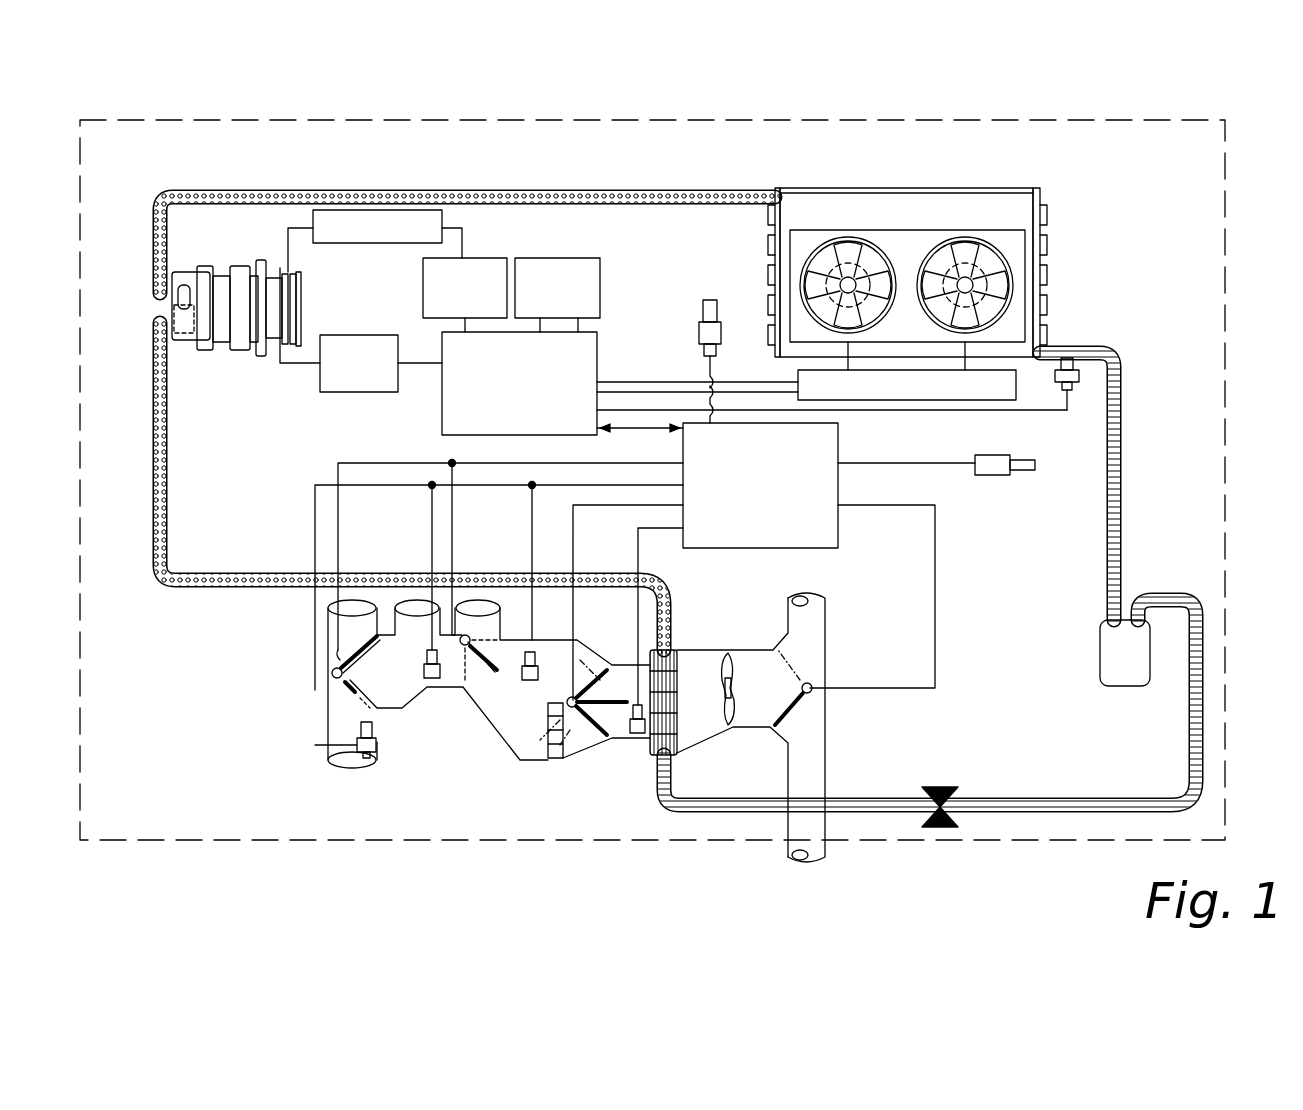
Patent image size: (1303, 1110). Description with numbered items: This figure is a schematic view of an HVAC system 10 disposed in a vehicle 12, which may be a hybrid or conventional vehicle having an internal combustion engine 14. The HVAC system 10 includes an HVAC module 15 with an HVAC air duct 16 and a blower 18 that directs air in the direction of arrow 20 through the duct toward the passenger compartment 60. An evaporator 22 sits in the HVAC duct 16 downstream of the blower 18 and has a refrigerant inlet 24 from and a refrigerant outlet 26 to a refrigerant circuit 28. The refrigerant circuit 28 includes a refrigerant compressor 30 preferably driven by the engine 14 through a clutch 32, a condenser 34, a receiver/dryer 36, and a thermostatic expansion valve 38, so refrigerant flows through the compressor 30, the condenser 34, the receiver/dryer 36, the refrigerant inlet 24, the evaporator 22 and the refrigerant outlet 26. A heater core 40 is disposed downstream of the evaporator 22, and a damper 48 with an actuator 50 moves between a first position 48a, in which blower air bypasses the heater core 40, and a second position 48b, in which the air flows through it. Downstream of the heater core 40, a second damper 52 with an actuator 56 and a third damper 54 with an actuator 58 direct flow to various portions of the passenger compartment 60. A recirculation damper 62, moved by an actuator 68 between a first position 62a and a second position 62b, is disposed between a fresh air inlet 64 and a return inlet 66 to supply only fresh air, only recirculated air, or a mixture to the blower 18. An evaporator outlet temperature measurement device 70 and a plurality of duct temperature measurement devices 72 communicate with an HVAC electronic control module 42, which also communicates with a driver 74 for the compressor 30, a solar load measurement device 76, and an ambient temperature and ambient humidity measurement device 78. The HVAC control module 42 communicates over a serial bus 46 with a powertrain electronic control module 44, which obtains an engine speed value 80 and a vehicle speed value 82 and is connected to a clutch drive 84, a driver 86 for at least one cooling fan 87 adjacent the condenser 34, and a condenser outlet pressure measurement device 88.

The HVAC system 10 is at (225, 92).
The vehicle 12 is at (133, 170).
The internal combustion engine 14 is at (292, 228).
The HVAC module 15 is at (232, 748).
The HVAC air duct 16 is at (480, 742).
The blower 18 is at (738, 660).
The arrow 20 is at (320, 810).
The evaporator 22 is at (670, 665).
The refrigerant inlet 24 is at (675, 772).
The refrigerant outlet 26 is at (680, 600).
The refrigerant circuit 28 is at (1093, 252).
The refrigerant compressor 30 is at (225, 352).
The clutch 32 is at (295, 317).
The condenser 34 is at (1003, 188).
The receiver/dryer 36 is at (1145, 686).
The thermostatic expansion valve 38 is at (940, 825).
The heater core 40 is at (548, 760).
The HVAC electronic control module 42 is at (840, 490).
The powertrain electronic control module 44 is at (442, 410).
The serial bus 46 is at (650, 420).
The damper 48 is at (612, 740).
The first position 48a is at (600, 758).
The second position 48b is at (580, 655).
The actuator 50 is at (565, 690).
The second damper 52 is at (485, 680).
The third damper 54 is at (345, 655).
The actuator 56 is at (470, 620).
The actuator 58 is at (318, 672).
The passenger compartment 60 is at (792, 582).
The recirculation damper 62 is at (800, 702).
The first position 62a is at (796, 662).
The second position 62b is at (800, 720).
The fresh air inlet 64 is at (828, 840).
The return inlet 66 is at (828, 610).
The actuator 68 is at (812, 680).
The evaporator outlet temperature measurement device 70 is at (638, 735).
The duct temperature measurement devices 72 is at (432, 678).
The driver 74 is at (186, 335).
The solar load measurement device 76 is at (1000, 475).
The ambient temperature and ambient humidity measurement device 78 is at (703, 314).
The engine speed value 80 is at (423, 290).
The vehicle speed value 82 is at (548, 258).
The clutch drive 84 is at (320, 392).
The driver 86 is at (1018, 385).
The cooling fan 87 is at (1005, 240).
The condenser outlet pressure measurement device 88 is at (1086, 368).